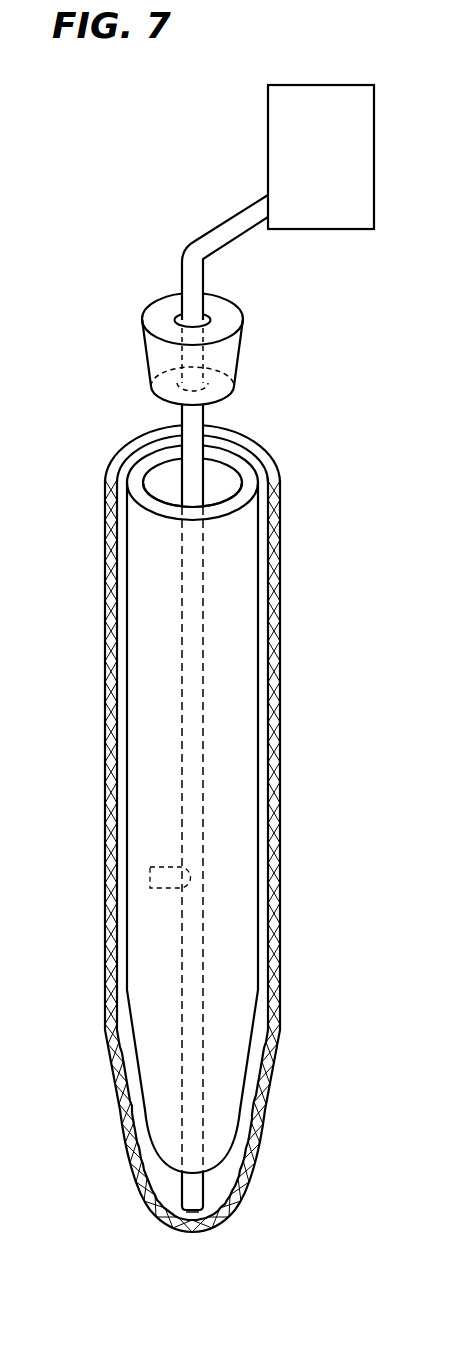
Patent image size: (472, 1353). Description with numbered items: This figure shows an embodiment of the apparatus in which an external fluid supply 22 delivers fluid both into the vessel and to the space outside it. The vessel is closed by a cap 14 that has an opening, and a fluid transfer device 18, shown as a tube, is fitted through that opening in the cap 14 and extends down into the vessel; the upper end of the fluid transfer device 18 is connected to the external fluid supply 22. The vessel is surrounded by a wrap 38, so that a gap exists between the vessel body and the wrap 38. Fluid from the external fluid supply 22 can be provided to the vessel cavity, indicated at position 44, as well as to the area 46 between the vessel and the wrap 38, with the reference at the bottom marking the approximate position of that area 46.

The external fluid supply 22 is at (295, 115).
The fluid transfer device 18 is at (227, 227).
The cap 14 is at (162, 351).
The position in vessel cavity 44 is at (162, 866).
The wrap 38 is at (118, 1060).
The area between the vessel and the wrap 46 is at (193, 1222).